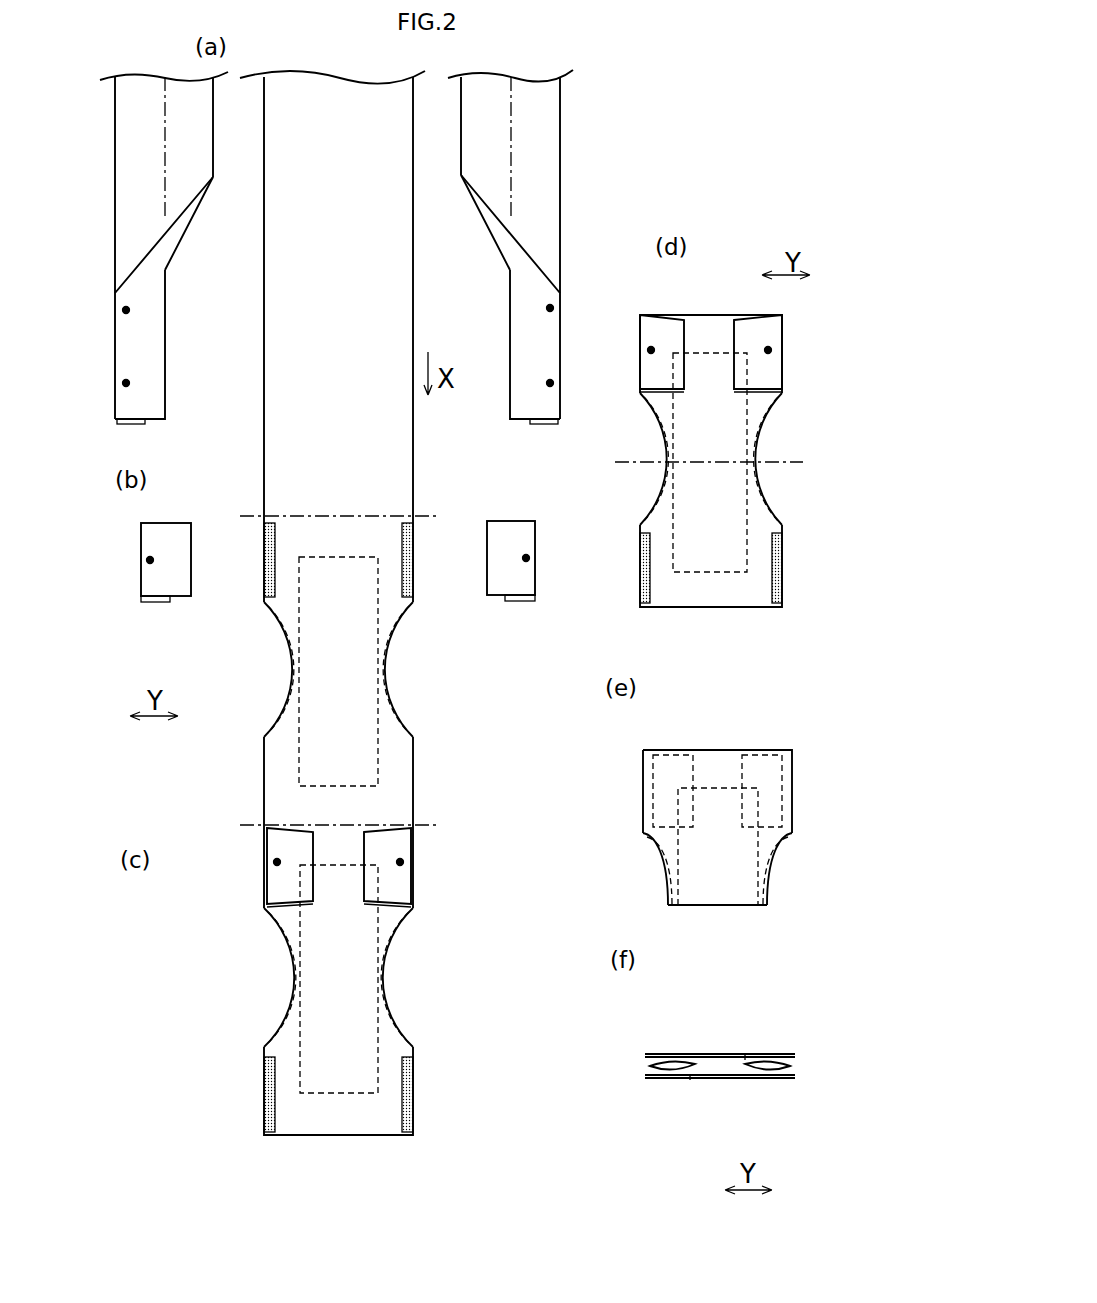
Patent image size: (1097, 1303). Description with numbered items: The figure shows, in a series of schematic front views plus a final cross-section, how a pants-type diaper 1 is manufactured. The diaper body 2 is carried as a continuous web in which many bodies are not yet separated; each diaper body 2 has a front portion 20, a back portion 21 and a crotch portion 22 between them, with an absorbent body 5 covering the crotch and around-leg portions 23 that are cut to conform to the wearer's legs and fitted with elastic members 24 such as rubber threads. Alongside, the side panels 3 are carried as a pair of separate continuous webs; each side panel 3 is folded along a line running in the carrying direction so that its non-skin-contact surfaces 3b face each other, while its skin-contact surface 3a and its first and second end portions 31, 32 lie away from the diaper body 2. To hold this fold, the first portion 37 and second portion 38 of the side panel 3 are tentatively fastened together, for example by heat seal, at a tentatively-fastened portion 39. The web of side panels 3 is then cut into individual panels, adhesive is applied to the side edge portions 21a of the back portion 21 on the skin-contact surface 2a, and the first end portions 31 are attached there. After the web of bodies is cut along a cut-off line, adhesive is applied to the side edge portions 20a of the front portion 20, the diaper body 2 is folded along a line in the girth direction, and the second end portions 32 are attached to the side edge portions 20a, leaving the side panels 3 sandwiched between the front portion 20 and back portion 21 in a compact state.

The pants-type diaper 1 is at (596, 838).
The diaper body 2 is at (378, 518).
The skin-contact surface 2a is at (395, 268).
The side panel 3 is at (520, 396).
The skin-contact surface of side panel 3a is at (158, 379).
The non-skin-contact surface 3b is at (205, 152).
The absorbent body 5 is at (340, 640).
The front portion 20 is at (330, 808).
The side edge portion of front portion 20a is at (264, 1075).
The back portion 21 is at (316, 518).
The side edge portion of back portion 21a is at (263, 540).
The crotch portion 22 is at (372, 686).
The around-leg portion 23 is at (275, 608).
The elastic member 24 is at (290, 635).
The first end portion 31 is at (125, 426).
The second end portion 32 is at (118, 420).
The first portion 37 is at (135, 118).
The second portion 38 is at (197, 117).
The tentatively-fastened portion 39 is at (126, 310).